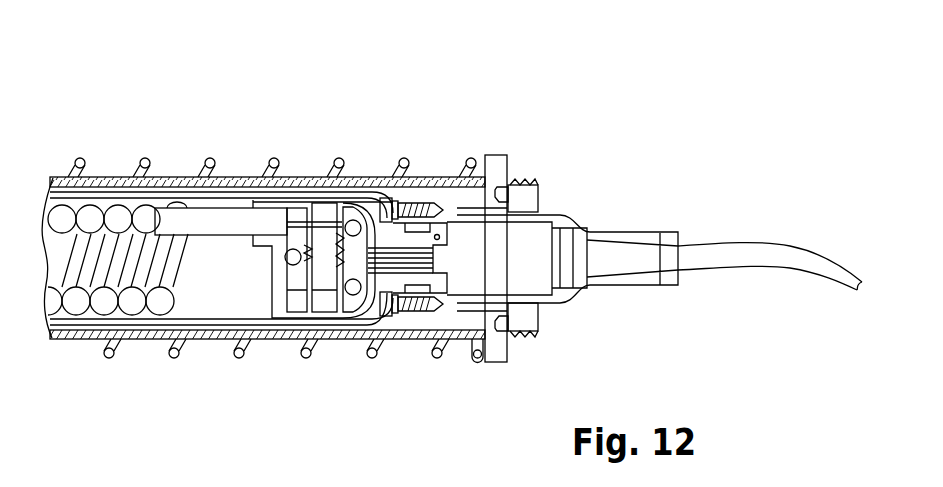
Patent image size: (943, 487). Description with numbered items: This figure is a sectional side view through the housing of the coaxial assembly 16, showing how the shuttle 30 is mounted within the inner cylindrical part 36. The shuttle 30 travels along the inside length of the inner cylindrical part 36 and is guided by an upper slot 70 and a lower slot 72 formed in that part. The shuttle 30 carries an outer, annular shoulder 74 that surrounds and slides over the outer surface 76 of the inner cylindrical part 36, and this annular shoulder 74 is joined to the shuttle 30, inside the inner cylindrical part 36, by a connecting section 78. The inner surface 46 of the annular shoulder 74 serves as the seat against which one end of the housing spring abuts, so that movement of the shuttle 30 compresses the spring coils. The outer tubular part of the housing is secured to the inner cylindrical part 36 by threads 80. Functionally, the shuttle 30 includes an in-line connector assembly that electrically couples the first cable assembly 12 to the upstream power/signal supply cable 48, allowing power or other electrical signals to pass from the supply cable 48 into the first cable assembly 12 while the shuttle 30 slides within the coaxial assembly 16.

The first cable assembly 12 is at (86, 313).
The coaxial assembly 16 is at (146, 394).
The shuttle 30 is at (376, 316).
The inner cylindrical part 36 is at (178, 177).
The inner surface 46 is at (485, 163).
The upstream power/signal supply cable 48 is at (777, 250).
The upper slot 70 is at (353, 188).
The lower slot 72 is at (287, 331).
The annular shoulder 74 is at (508, 163).
The outer surface 76 is at (245, 177).
The connecting section 78 is at (460, 196).
The threads 80 is at (523, 184).